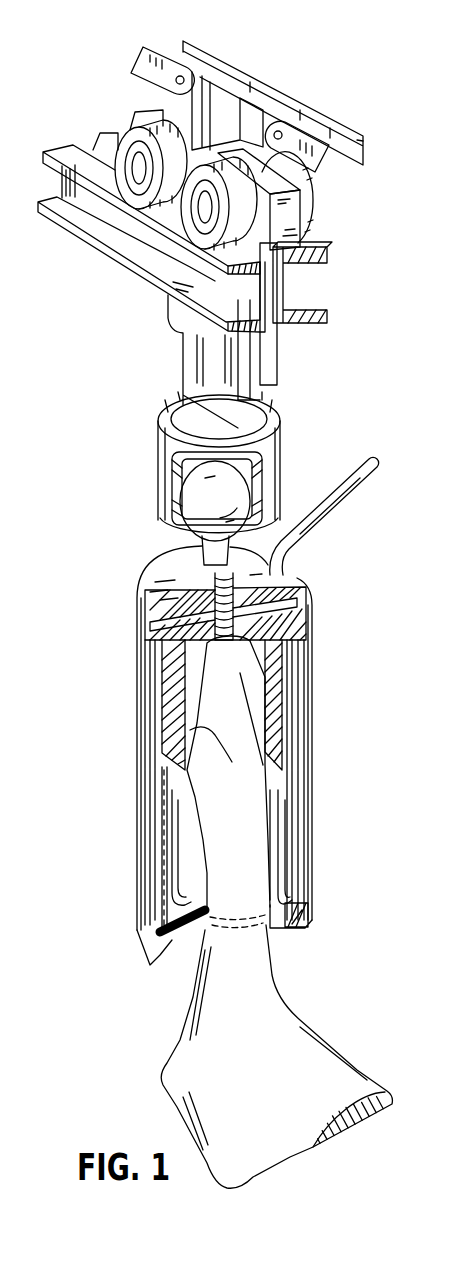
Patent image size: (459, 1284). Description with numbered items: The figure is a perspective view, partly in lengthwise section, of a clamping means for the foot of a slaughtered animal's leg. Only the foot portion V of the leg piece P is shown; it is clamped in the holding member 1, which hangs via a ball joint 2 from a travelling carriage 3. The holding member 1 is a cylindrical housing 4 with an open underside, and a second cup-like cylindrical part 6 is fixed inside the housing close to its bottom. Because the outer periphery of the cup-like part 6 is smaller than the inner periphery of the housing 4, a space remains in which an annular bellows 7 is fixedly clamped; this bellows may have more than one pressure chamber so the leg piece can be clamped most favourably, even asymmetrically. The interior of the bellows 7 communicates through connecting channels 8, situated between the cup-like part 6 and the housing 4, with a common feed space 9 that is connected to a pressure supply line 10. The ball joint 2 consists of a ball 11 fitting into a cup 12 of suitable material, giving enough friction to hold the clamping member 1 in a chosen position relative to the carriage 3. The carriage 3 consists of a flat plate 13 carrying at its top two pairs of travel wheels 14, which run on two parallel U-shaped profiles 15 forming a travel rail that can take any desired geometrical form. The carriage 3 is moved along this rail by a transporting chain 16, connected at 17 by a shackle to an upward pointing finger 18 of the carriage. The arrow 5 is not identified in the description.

The holding member 1 is at (320, 639).
The ball joint 2 is at (171, 533).
The travelling carriage 3 is at (165, 352).
The cylindrical housing 4 is at (303, 913).
The insertion direction 5 is at (283, 947).
The cup-like cylindrical part 6 is at (297, 617).
The annular bellows 7 is at (283, 840).
The connecting channels 8 is at (158, 657).
The common feed space 9 is at (297, 593).
The pressure supply line 10 is at (327, 510).
The ball 11 is at (203, 503).
The cup 12 is at (253, 468).
The flat plate 13 is at (266, 371).
The travel wheels 14 is at (307, 212).
The U-shaped profiles 15 is at (263, 307).
The transporting chain 16 is at (340, 127).
The shackle connection 17 is at (236, 59).
The upward pointing finger 18 is at (187, 110).
The foot portion V is at (266, 807).
The leg piece P is at (303, 1067).